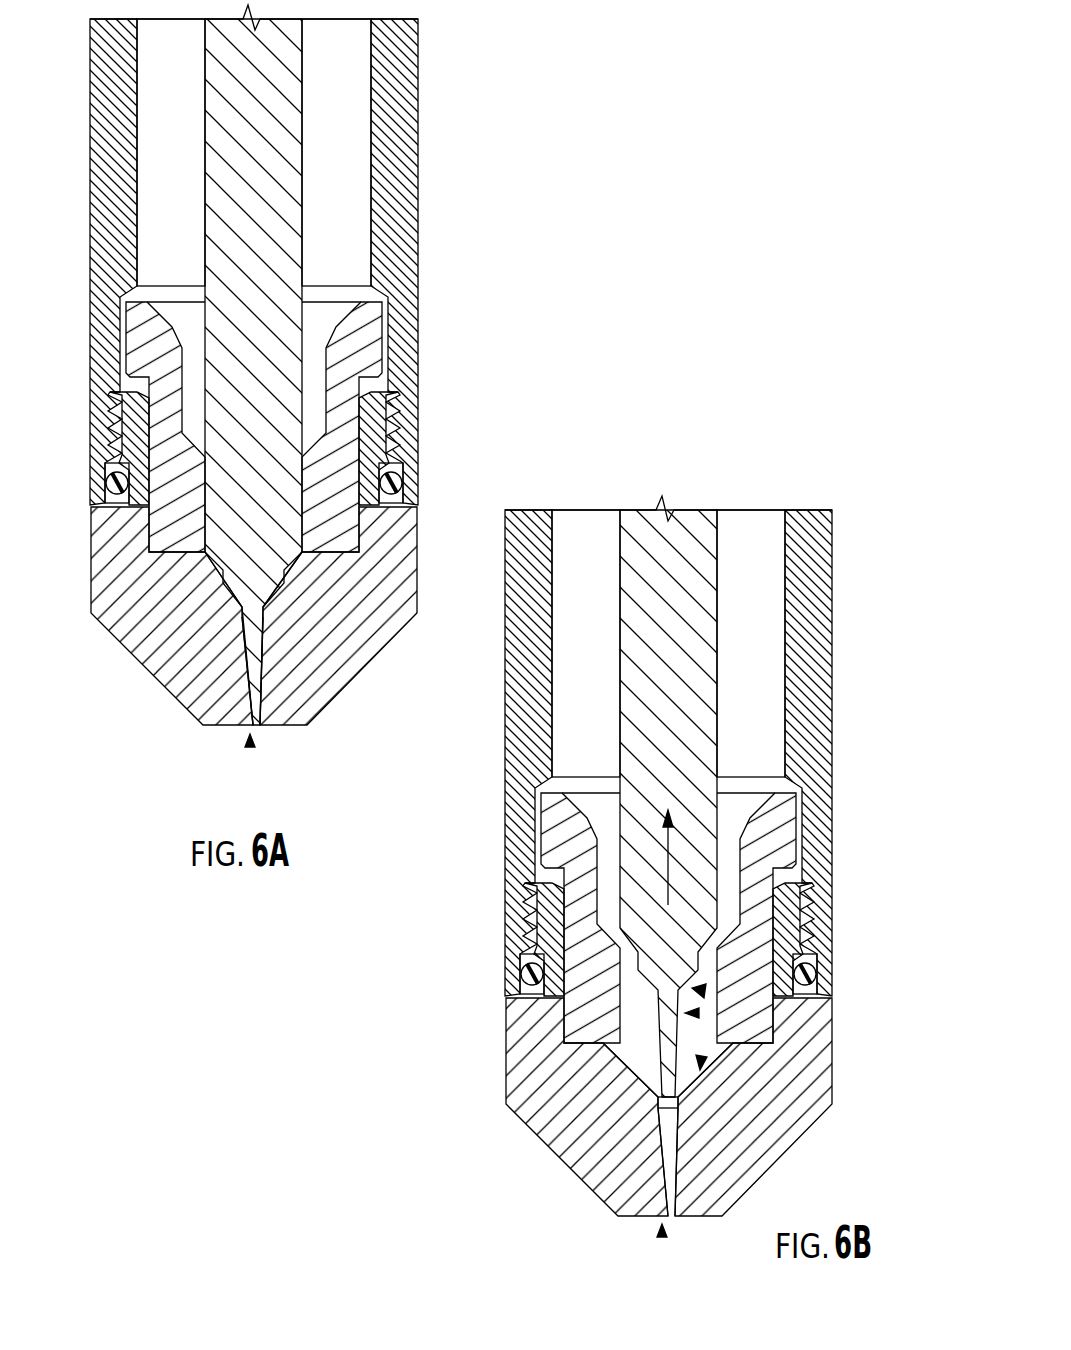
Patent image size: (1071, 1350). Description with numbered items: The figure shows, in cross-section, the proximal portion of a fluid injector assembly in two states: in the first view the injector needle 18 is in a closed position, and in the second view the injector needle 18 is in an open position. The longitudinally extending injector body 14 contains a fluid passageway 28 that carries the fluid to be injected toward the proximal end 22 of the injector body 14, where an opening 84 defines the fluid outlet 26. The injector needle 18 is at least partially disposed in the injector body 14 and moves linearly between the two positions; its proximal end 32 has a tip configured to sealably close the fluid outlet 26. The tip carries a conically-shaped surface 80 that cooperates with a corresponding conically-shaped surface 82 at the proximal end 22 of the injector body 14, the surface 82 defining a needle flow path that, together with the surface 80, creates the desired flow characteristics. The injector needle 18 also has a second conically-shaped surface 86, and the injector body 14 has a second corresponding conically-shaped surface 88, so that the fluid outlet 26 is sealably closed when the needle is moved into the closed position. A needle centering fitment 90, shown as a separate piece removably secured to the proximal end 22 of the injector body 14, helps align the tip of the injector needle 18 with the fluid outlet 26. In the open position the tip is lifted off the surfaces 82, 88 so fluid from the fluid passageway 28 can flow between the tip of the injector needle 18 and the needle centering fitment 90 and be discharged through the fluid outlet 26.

In FIG. 6A, the injector body 14 is at (410, 195).
In FIG. 6B, the injector body 14 is at (825, 617).
In FIG. 6A, the injector needle 18 is at (217, 132).
In FIG. 6B, the injector needle 18 is at (632, 707).
In FIG. 6A, the proximal end 22 is at (177, 660).
In FIG. 6B, the proximal end 22 is at (590, 1172).
In FIG. 6A, the fluid outlet 26 is at (250, 744).
In FIG. 6B, the fluid outlet 26 is at (662, 1234).
In FIG. 6A, the fluid passageway 28 is at (345, 107).
In FIG. 6B, the fluid passageway 28 is at (754, 559).
In FIG. 6A, the proximal end 32 is at (237, 585).
In FIG. 6B, the proximal end 32 is at (655, 971).
In FIG. 6B, the conically-shaped surface 80 is at (698, 1012).
In FIG. 6B, the conically-shaped surface 82 is at (682, 1128).
In FIG. 6A, the opening 84 is at (258, 728).
In FIG. 6B, the opening 84 is at (669, 1218).
In FIG. 6B, the second conically-shaped surface 86 is at (705, 992).
In FIG. 6B, the second corresponding conically-shaped surface 88 is at (703, 1058).
In FIG. 6A, the needle centering fitment 90 is at (372, 355).
In FIG. 6B, the needle centering fitment 90 is at (795, 825).